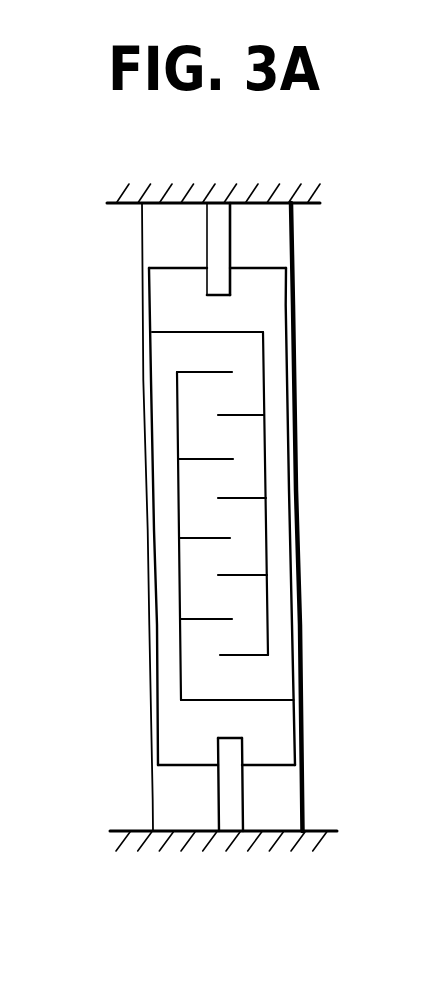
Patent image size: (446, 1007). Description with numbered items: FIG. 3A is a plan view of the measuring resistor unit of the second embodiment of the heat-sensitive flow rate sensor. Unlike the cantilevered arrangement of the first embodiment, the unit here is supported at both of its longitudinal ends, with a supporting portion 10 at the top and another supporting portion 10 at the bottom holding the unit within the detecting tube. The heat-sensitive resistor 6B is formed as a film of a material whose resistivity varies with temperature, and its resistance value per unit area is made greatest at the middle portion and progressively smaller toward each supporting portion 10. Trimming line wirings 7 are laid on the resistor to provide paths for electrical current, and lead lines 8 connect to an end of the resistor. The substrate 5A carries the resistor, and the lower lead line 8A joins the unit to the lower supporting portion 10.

The supporting portion 10 is at (127, 193).
The heat-sensitive resistor 6B is at (297, 495).
The inner casing 5A is at (170, 799).
The lead lines 8 is at (217, 252).
The lower support rod 8A is at (230, 792).
The trimming line wirings 7 is at (178, 518).